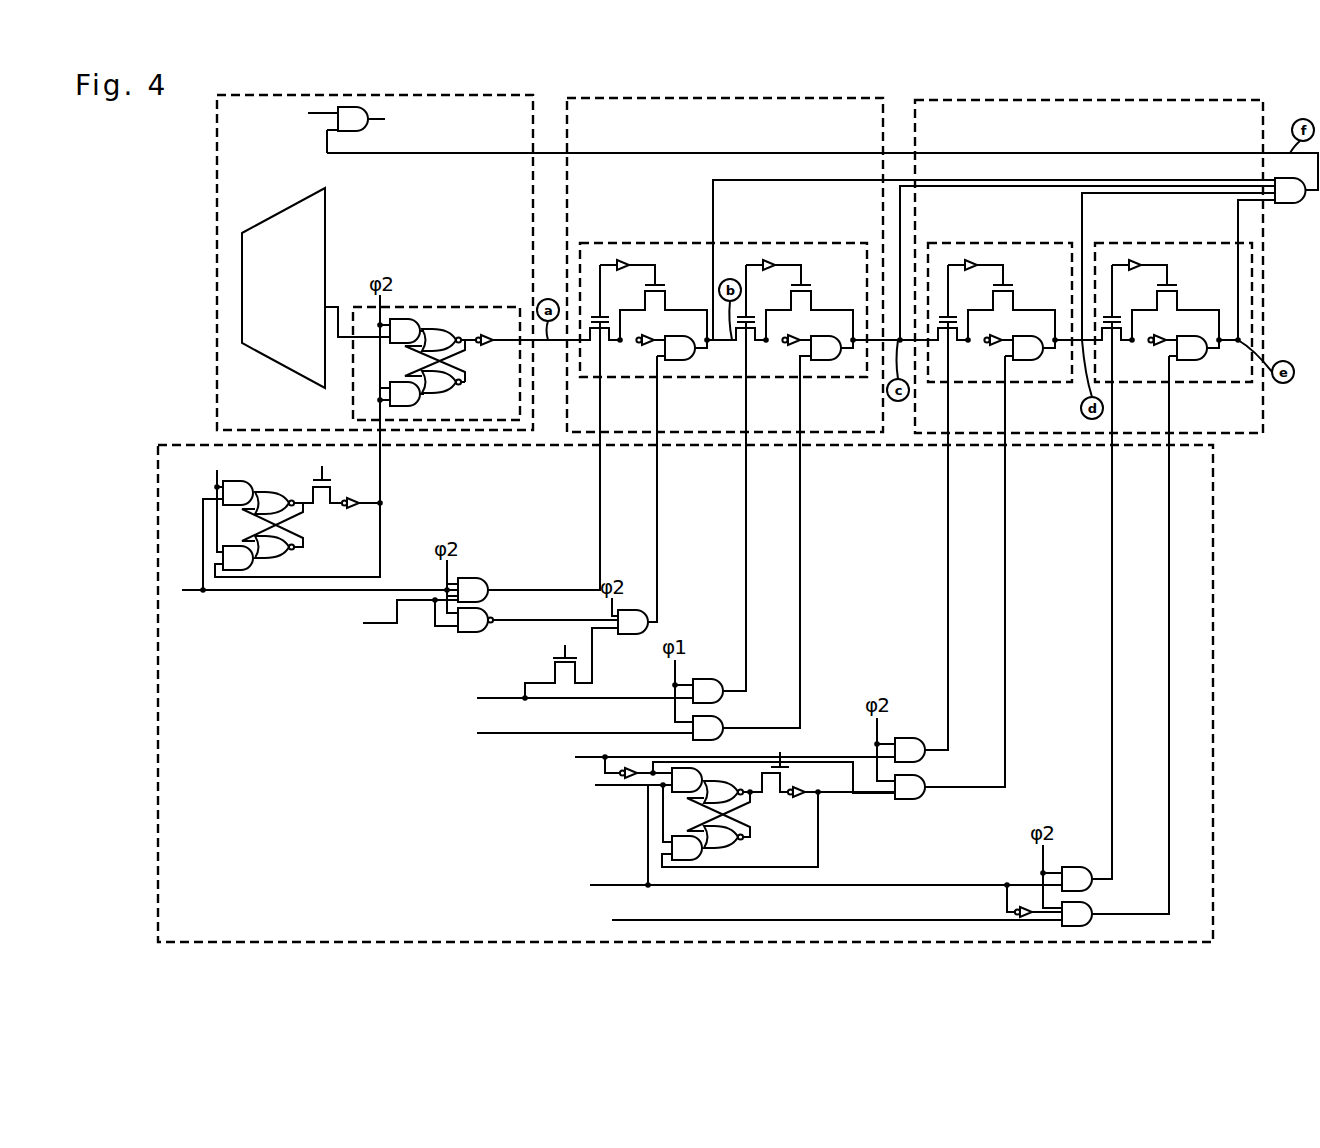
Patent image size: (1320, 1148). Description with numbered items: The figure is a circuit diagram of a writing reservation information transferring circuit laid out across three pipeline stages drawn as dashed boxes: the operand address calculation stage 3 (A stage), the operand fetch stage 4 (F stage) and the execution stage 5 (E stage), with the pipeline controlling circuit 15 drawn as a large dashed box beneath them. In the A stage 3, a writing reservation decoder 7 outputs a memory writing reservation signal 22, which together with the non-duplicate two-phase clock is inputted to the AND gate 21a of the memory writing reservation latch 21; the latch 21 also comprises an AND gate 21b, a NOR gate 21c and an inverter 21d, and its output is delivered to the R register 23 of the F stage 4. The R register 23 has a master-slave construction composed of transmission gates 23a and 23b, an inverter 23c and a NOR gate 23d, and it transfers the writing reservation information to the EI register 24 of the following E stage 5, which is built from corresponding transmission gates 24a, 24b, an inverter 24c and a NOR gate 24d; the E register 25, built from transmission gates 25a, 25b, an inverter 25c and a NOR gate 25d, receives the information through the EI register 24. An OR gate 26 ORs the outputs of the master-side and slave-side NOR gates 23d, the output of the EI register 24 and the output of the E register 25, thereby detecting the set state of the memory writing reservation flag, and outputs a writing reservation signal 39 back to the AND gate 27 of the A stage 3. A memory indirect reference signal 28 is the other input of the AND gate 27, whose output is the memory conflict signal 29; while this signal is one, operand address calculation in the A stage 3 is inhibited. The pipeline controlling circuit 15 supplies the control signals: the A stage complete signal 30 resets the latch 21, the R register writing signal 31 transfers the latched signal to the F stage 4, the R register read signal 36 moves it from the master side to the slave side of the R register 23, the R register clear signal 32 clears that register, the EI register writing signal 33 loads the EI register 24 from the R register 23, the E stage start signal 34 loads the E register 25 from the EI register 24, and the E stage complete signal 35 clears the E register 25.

The operand address calculation stage 3 is at (217, 124).
The operand fetch stage 4 is at (883, 135).
The execution stage 5 is at (1263, 120).
The writing reservation decoder 7 is at (269, 226).
The pipeline controlling circuit 15 is at (1213, 690).
The memory writing reservation latch 21 is at (353, 407).
The AND gate 21a is at (418, 316).
The AND gate 21b is at (418, 404).
The NOR gate 21c is at (448, 326).
The inverter 21d is at (493, 330).
The memory writing reservation signal 22 is at (350, 312).
The R register 23 is at (641, 243).
The transmission gate 23a is at (609, 313).
The transmission gate 23b is at (657, 286).
The inverter 23c is at (639, 346).
The NOR gate 23d is at (698, 352).
The EI register 24 is at (993, 243).
The transmission gate 24a is at (957, 313).
The transmission gate 24b is at (1005, 286).
The inverter 24c is at (987, 346).
The NOR gate 24d is at (1046, 356).
The E register 25 is at (1163, 243).
The transmission gate 25a is at (1121, 313).
The transmission gate 25b is at (1169, 286).
The inverter 25c is at (1151, 346).
The NOR gate 25d is at (1212, 356).
The OR gate 26 is at (1292, 205).
The AND gate 27 is at (372, 130).
The memory indirect reference signal 28 is at (308, 114).
The memory conflict signal 29 is at (382, 119).
The A stage complete signal 30 is at (200, 593).
The R register writing signal 31 is at (363, 623).
The R register clear signal 32 is at (512, 733).
The EI register writing signal 33 is at (575, 757).
The E stage start signal 34 is at (603, 885).
The E stage complete signal 35 is at (612, 920).
The R register read signal 36 is at (507, 698).
The writing reservation signal 39 is at (327, 153).